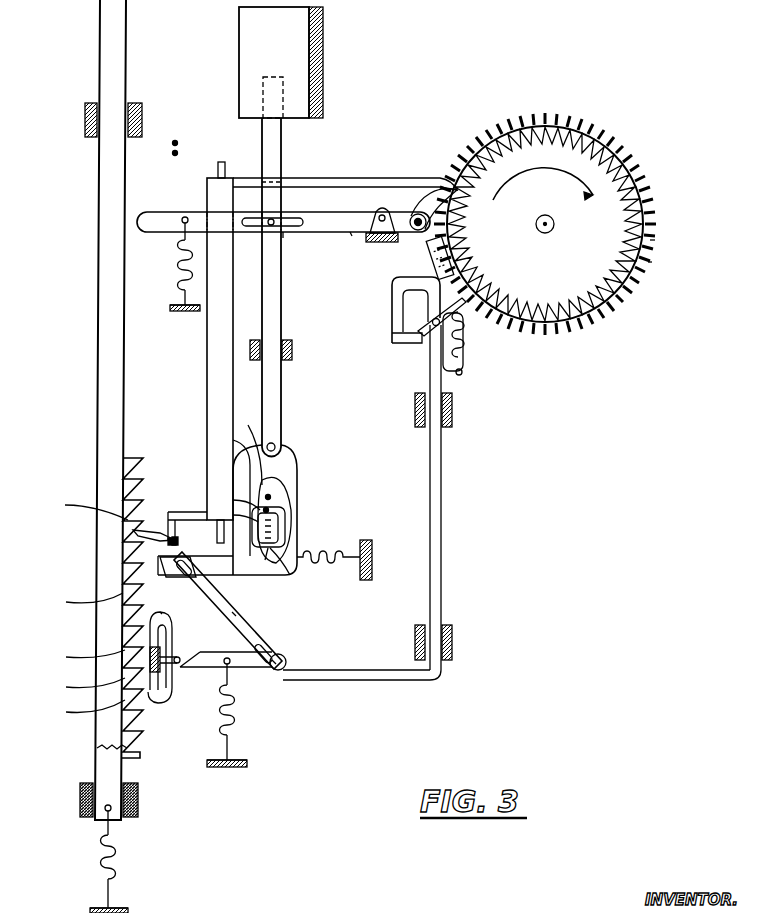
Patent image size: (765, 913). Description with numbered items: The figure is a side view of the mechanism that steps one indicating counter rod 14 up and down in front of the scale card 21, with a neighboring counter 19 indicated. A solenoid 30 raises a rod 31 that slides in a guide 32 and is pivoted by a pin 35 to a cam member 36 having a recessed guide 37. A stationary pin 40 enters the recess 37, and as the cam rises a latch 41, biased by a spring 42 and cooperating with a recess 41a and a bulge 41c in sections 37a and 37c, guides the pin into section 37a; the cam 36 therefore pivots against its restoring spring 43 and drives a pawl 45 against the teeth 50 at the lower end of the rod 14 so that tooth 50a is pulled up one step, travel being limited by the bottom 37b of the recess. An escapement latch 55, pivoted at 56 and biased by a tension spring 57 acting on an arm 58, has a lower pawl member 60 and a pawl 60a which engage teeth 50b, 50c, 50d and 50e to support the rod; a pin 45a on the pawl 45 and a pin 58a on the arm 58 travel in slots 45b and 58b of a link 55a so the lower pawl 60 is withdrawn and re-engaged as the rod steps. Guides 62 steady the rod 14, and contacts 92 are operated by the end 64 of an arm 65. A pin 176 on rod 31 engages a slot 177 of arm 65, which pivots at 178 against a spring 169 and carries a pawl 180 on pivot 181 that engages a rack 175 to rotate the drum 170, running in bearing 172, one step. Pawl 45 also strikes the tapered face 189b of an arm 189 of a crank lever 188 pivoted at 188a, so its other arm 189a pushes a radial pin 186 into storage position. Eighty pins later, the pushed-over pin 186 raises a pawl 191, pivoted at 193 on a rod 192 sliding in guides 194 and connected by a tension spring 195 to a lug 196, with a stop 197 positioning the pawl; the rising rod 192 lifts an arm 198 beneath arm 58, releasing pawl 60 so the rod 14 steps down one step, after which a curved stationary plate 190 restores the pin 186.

The indicating counter rod 14 is at (100, 218).
The indicating counter 19 is at (90, 909).
The scale card 21 is at (240, 500).
The solenoid 30 is at (240, 42).
The rod 31 is at (282, 170).
The guide 32 is at (447, 180).
The pin 35 is at (275, 444).
The cam member 36 is at (290, 468).
The recessed guide 37 is at (285, 545).
The recess section 37a is at (283, 515).
The recess bottom 37b is at (268, 550).
The recess section 37c is at (178, 545).
The stationary pin 40 is at (270, 492).
The latch 41 is at (233, 440).
The recess 41a is at (275, 560).
The bulge 41c is at (250, 425).
The spring 42 is at (238, 515).
The restoring spring 43 is at (352, 565).
The pawl 45 is at (133, 531).
The pin 45a is at (200, 566).
The slot 45b is at (182, 576).
The teeth 50 is at (120, 541).
The tooth 50a is at (77, 507).
The tooth 50b is at (75, 684).
The tooth 50c is at (75, 709).
The tooth 50d is at (74, 600).
The tooth 50e is at (75, 654).
The escapement latch 55 is at (185, 645).
The link 55a is at (234, 614).
The pivot 56 is at (180, 665).
The tension spring 57 is at (232, 706).
The arm 58 is at (282, 670).
The pin 58a is at (272, 650).
The slot 58b is at (282, 660).
The lower pawl member 60 is at (152, 704).
The pawl 60a is at (158, 618).
The guides 62 is at (138, 110).
The end of arm 64 is at (186, 212).
The arm 65 is at (352, 233).
The contacts 92 is at (178, 132).
The spring 169 is at (183, 268).
The drum 170 is at (607, 207).
The bearing 172 is at (548, 233).
The rack 175 is at (648, 262).
The pin 176 is at (278, 215).
The slot 177 is at (283, 232).
The pivot 178 is at (380, 212).
The pawl 180 is at (416, 214).
The pivot 181 is at (414, 214).
The pins 186 is at (650, 240).
The crank lever 188 is at (210, 190).
The pivot 188a is at (240, 148).
The arm 189 is at (170, 511).
The arm 189a is at (332, 178).
The tapered face 189b is at (170, 538).
The curved stationary plate 190 is at (430, 262).
The pawl 191 is at (465, 325).
The rod 192 is at (441, 520).
The pivot 193 is at (424, 338).
The guides 194 is at (453, 420).
The tension spring 195 is at (463, 350).
The lug 196 is at (461, 375).
The stop 197 is at (392, 310).
The arm 198 is at (345, 680).